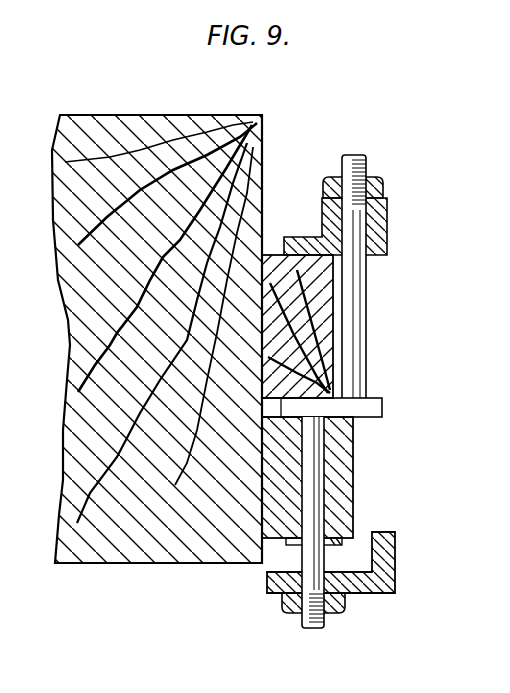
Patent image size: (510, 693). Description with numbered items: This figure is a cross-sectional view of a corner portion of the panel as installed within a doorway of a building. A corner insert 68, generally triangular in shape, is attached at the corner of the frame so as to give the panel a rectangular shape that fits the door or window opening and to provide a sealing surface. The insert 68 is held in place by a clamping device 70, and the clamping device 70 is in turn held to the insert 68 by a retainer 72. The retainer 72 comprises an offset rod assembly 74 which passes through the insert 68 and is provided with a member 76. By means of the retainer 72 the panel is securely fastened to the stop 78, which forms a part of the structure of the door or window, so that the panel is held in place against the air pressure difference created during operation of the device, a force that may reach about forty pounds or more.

The corner insert 68 is at (338, 473).
The clamping device 70 is at (366, 582).
The retainer 72 is at (381, 366).
The offset rod assembly 74 is at (310, 559).
The member 76 is at (387, 237).
The stop 78 is at (318, 310).